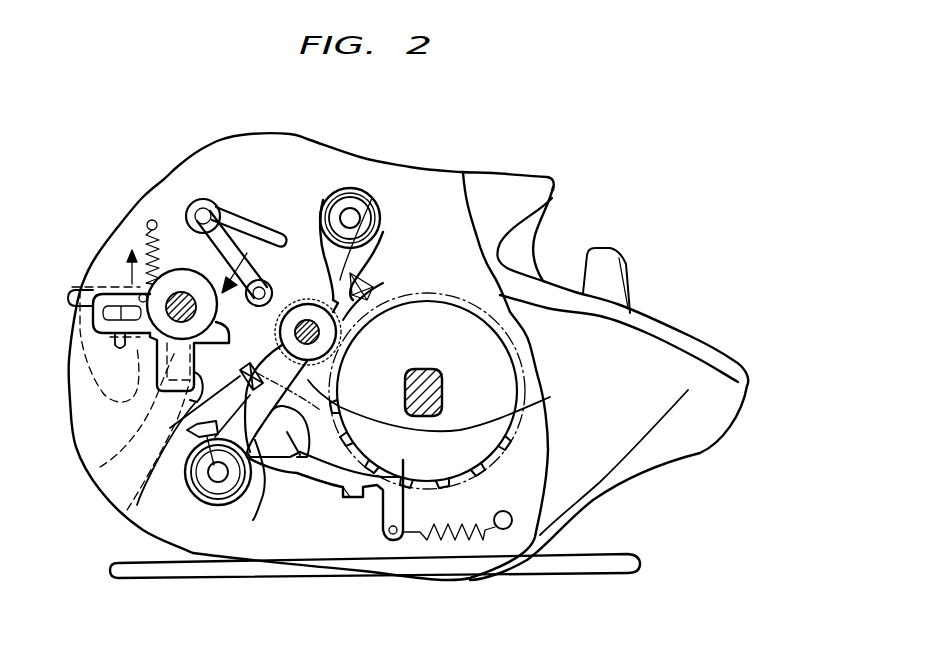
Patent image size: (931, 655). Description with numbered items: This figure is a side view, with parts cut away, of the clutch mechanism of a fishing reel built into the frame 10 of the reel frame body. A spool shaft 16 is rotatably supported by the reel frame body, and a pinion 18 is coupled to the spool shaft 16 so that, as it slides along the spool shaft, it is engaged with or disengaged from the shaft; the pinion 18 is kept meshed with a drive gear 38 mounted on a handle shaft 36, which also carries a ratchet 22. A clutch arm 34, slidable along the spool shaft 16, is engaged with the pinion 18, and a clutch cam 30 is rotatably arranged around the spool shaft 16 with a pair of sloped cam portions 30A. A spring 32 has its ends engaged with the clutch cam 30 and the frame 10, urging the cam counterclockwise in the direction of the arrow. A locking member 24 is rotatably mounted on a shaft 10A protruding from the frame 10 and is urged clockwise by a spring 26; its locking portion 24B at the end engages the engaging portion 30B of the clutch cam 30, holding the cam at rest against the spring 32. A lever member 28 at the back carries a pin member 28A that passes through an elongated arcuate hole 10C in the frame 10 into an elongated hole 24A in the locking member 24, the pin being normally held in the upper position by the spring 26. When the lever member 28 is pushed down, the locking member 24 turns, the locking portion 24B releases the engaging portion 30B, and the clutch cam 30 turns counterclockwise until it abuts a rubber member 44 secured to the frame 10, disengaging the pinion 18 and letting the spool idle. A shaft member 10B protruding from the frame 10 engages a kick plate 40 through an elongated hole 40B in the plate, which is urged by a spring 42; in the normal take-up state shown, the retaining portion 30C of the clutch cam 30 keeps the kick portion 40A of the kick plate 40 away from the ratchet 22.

The frame 10 is at (293, 167).
The shaft 10A is at (180, 290).
The shaft member 10B is at (261, 500).
The elongated arcuate hole 10C is at (95, 368).
The spool shaft 16 is at (309, 320).
The pinion 18 is at (332, 195).
The ratchet 22 is at (483, 470).
The locking member 24 is at (135, 405).
The elongated hole 24A is at (113, 333).
The locking portion 24B is at (120, 497).
The spring 26 is at (137, 257).
The lever member 28 is at (68, 296).
The pin member 28A is at (127, 307).
The clutch cam 30 is at (273, 240).
The cam portions 30A is at (365, 272).
The engaging portion 30B is at (100, 468).
The retaining portion 30C is at (550, 397).
The spring 32 is at (233, 205).
The clutch arm 34 is at (378, 197).
The handle shaft 36 is at (425, 385).
The drive gear 38 is at (484, 205).
The kick plate 40 is at (313, 487).
The kick portion 40A is at (347, 497).
The elongated hole 40B is at (300, 457).
The spring 42 is at (447, 543).
The rubber member 44 is at (200, 467).